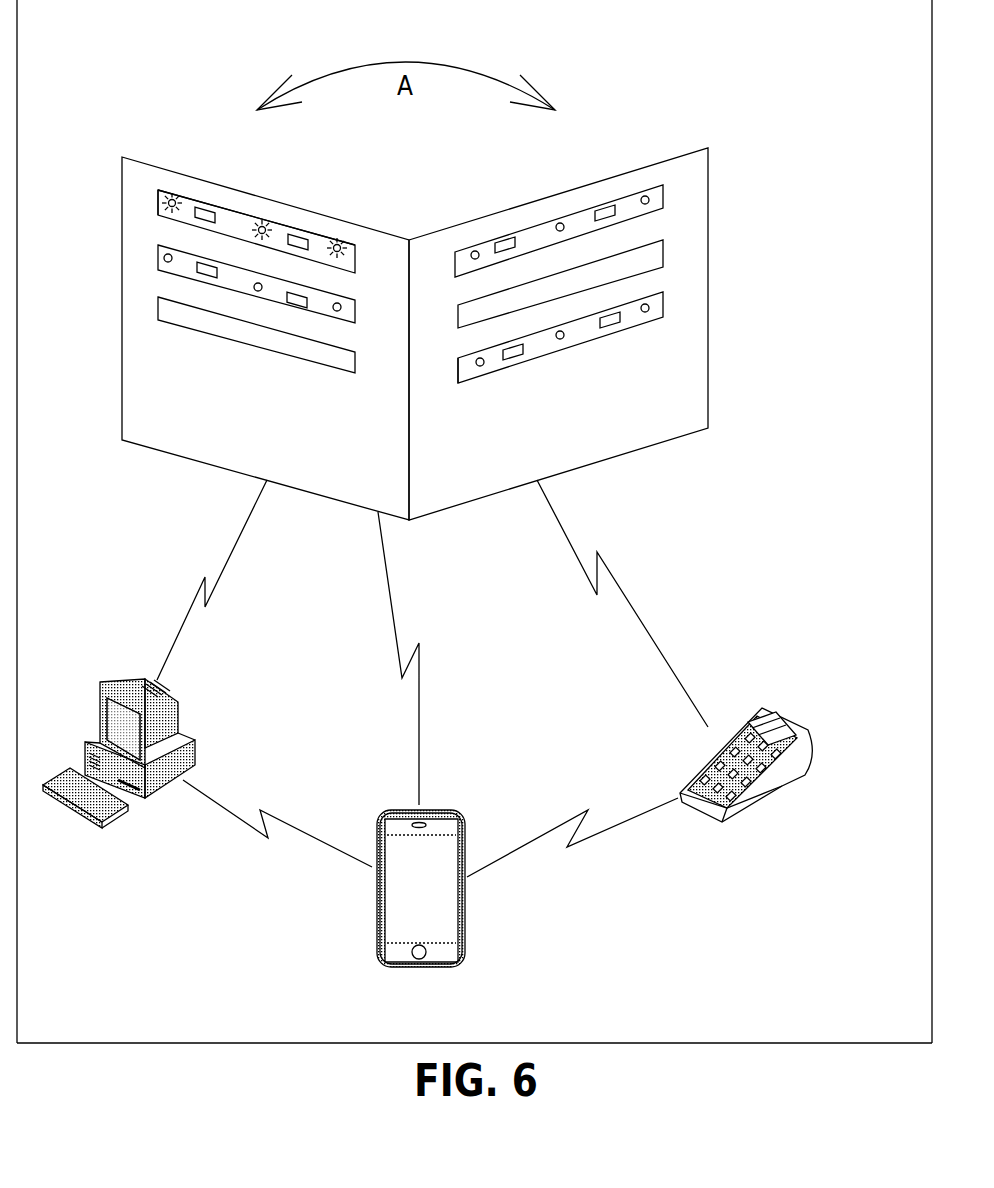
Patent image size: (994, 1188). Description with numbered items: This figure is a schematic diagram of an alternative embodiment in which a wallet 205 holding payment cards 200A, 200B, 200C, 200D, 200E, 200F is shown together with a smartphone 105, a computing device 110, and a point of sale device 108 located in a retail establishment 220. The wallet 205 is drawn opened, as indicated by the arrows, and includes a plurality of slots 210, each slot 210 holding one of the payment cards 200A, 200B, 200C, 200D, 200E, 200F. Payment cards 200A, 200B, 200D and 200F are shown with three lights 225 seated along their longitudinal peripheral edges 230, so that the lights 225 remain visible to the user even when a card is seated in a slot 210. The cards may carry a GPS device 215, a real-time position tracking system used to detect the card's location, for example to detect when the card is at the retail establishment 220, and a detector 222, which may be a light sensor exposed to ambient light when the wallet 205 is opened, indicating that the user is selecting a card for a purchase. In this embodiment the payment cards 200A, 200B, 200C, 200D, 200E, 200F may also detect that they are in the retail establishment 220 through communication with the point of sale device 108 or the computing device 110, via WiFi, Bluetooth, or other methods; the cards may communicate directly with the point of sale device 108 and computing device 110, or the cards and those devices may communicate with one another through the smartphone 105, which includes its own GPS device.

The wallet 205 is at (209, 445).
The retail establishment 220 is at (781, 541).
The payment card 200A is at (237, 222).
The payment card 200B is at (182, 268).
The payment card 200C is at (202, 320).
The payment card 200D is at (537, 242).
The payment card 200E is at (617, 262).
The payment card 200F is at (582, 335).
The peripheral edge 230 is at (190, 205).
The slot 210 is at (153, 213).
The light 225 is at (170, 198).
The GPS device 215 is at (205, 210).
The detector 222 is at (298, 240).
The computing device 110 is at (147, 797).
The smartphone 105 is at (377, 922).
The point of sale device 108 is at (792, 792).